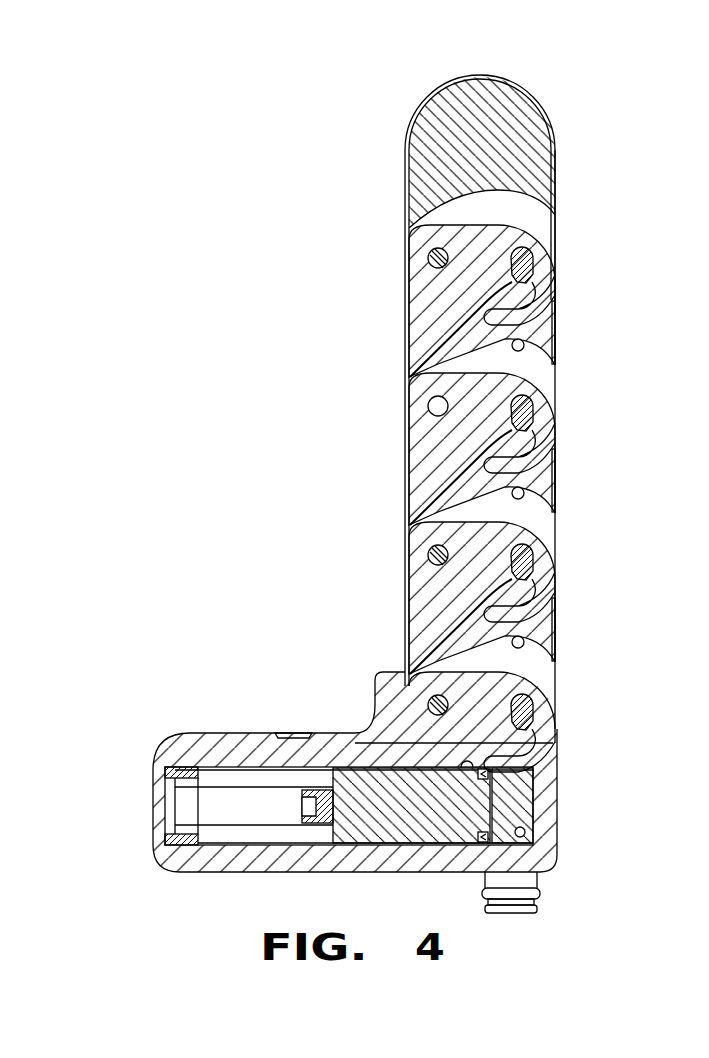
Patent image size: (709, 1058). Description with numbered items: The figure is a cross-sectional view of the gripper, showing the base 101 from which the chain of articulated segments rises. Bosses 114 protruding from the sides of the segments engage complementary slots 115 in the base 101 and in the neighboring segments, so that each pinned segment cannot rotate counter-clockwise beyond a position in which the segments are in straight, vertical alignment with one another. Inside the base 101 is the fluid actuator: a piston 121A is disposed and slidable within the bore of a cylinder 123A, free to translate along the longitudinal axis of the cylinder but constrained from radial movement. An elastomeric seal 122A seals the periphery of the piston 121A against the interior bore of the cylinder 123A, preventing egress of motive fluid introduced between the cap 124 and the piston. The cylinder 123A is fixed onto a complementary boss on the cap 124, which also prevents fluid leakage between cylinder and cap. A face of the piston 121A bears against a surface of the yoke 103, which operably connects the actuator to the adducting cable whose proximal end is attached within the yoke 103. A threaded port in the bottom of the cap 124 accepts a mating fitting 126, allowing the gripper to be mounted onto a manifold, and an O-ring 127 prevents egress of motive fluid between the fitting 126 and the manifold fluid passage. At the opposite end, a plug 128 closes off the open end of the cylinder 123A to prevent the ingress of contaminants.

The base 101 is at (200, 735).
The yoke 103 is at (315, 823).
The boss 114 is at (525, 710).
The slot 115 is at (543, 730).
The piston 121A is at (415, 832).
The elastomeric seal 122A is at (478, 843).
The cylinder 123A is at (237, 767).
The cap 124 is at (525, 803).
The fitting 126 is at (535, 909).
The O-ring 127 is at (533, 893).
The plug 128 is at (157, 820).